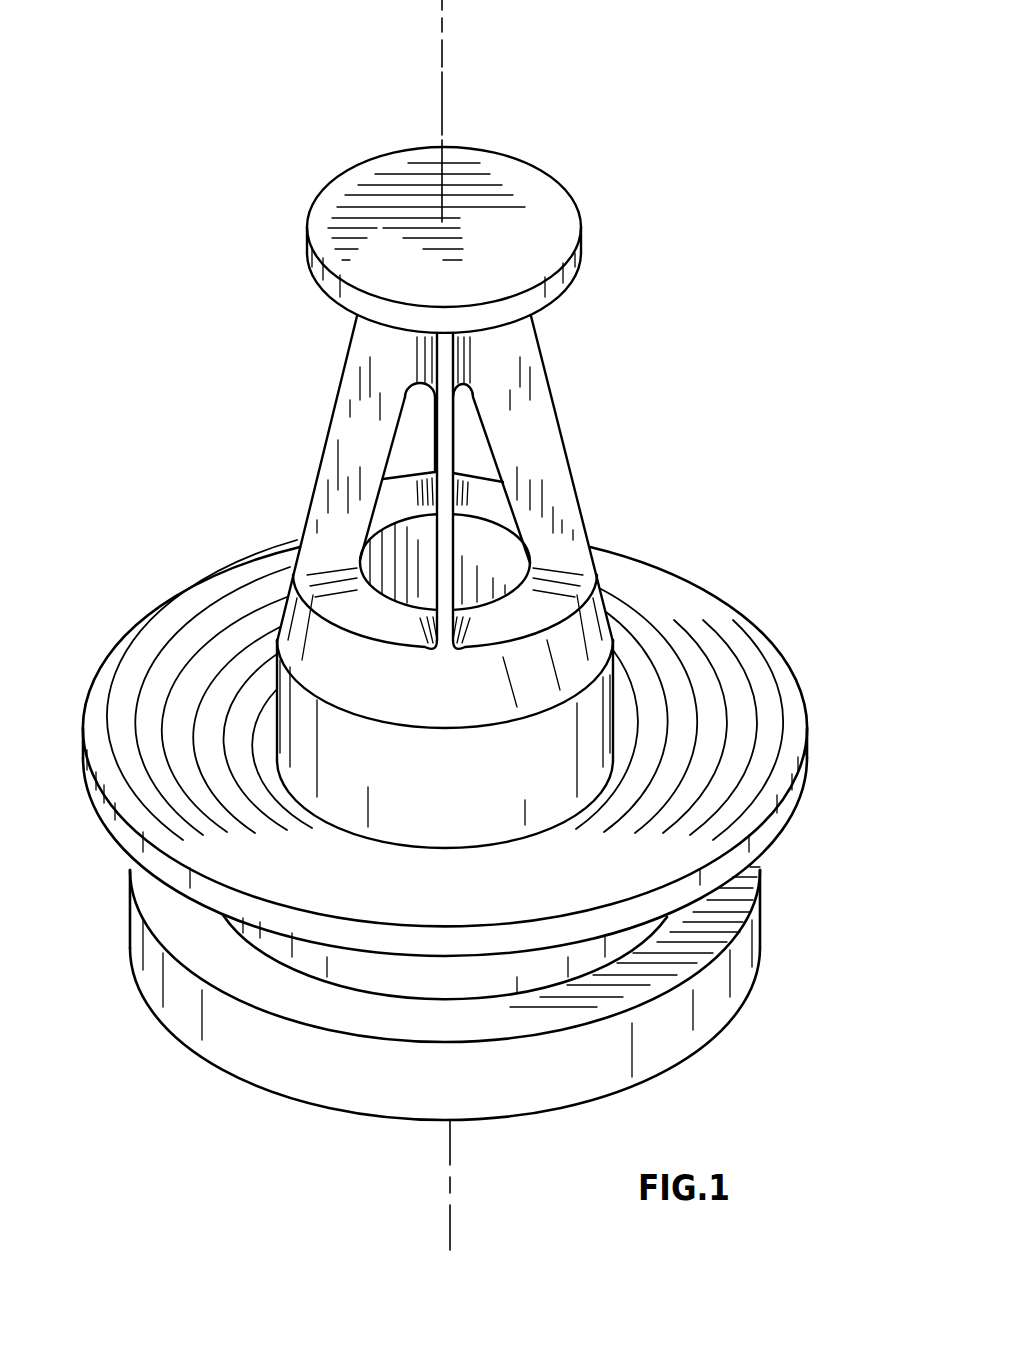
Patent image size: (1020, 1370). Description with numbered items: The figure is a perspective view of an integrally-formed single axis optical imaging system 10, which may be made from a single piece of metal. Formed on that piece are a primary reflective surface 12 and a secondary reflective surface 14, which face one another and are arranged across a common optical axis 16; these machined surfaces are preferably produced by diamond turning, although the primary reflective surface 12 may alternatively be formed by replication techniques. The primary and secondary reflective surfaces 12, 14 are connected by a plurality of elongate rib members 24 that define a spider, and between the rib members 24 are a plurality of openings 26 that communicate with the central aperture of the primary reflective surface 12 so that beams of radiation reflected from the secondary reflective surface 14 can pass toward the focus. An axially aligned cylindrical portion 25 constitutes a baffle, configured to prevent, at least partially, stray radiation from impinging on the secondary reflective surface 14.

The optical imaging system 10 is at (138, 239).
The primary reflective surface 12 is at (703, 558).
The secondary reflective surface 14 is at (547, 303).
The common optical axis 16 is at (442, 93).
The elongate rib members 24 is at (338, 396).
The cylindrical portion 25 is at (597, 713).
The openings 26 is at (400, 453).